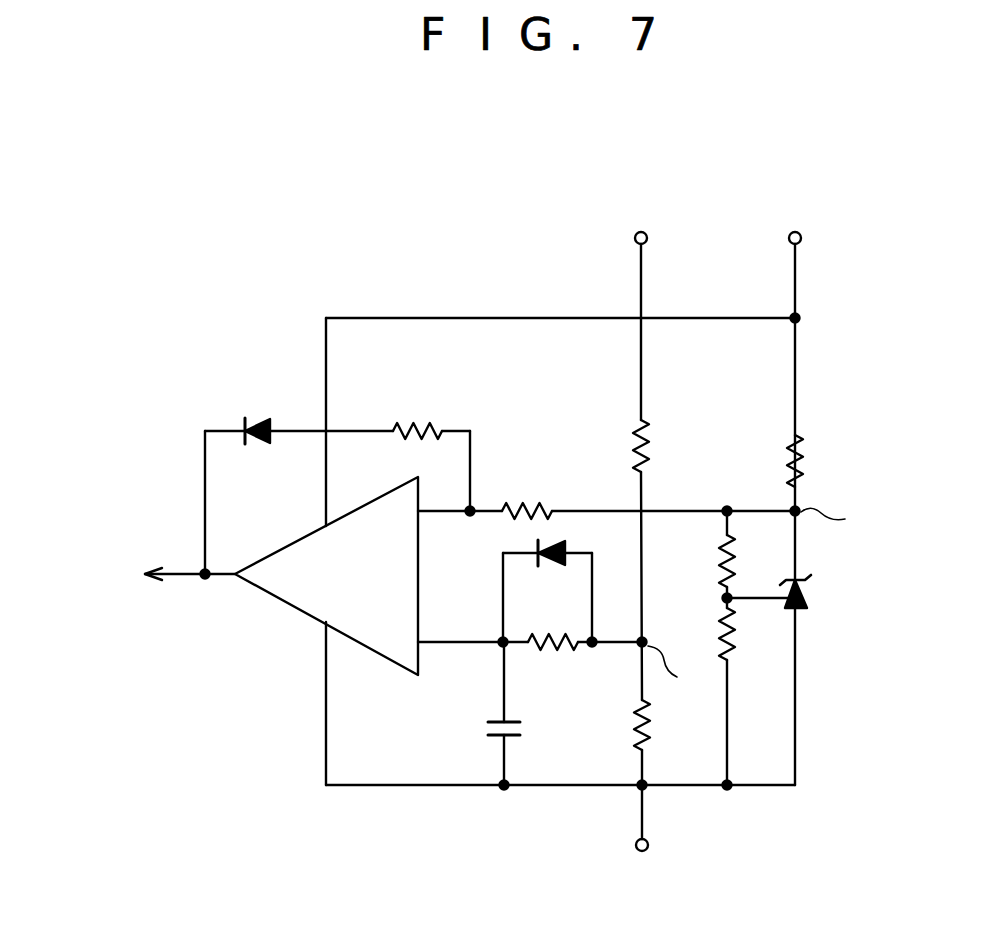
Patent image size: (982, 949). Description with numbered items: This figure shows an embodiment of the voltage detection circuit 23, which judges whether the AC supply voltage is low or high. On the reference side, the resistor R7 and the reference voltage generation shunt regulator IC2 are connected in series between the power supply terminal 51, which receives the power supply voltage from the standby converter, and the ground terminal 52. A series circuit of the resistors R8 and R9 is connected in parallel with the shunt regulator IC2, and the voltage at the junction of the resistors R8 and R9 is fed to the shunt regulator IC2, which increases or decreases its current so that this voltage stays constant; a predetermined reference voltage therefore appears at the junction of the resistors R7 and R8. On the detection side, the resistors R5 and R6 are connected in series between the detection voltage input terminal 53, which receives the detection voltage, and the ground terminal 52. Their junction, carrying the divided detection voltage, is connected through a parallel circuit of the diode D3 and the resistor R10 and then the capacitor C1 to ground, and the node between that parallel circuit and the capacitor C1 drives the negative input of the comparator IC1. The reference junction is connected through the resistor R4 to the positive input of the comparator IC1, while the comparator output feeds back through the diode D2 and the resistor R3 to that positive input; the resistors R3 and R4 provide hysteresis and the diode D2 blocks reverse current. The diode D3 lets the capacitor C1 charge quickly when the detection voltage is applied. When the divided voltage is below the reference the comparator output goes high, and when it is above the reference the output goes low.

The voltage detection circuit 23 is at (487, 236).
The power supply terminal 51 is at (801, 245).
The ground terminal 52 is at (642, 852).
The detection voltage input terminal 53 is at (647, 245).
The comparator IC1 is at (362, 576).
The reference voltage generation shunt regulator IC2 is at (832, 592).
The diode D2 is at (299, 480).
The diode D3 is at (547, 591).
The resistor R3 is at (431, 448).
The resistor R4 is at (527, 492).
The resistor R5 is at (613, 446).
The resistor R6 is at (613, 725).
The resistor R7 is at (766, 461).
The resistor R8 is at (699, 561).
The resistor R9 is at (699, 634).
The resistor R10 is at (551, 661).
The capacitor C1 is at (479, 713).